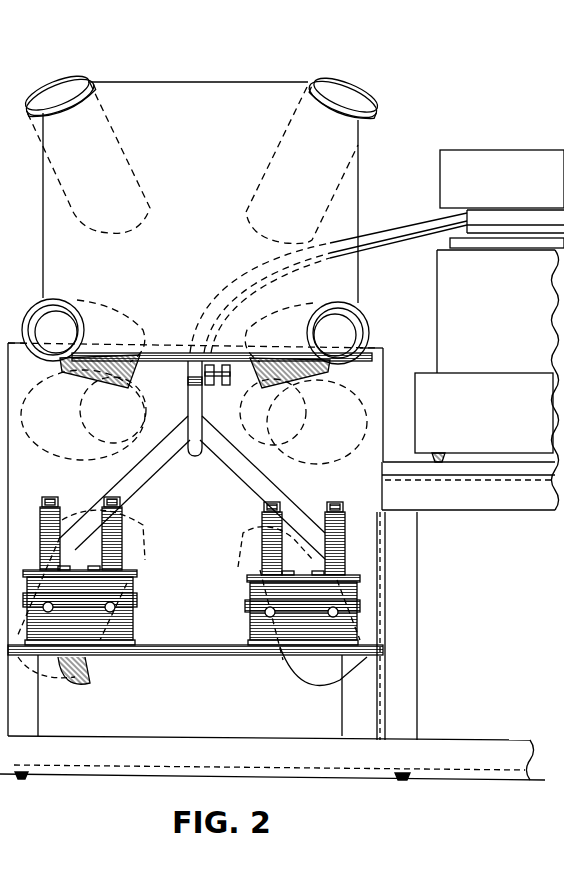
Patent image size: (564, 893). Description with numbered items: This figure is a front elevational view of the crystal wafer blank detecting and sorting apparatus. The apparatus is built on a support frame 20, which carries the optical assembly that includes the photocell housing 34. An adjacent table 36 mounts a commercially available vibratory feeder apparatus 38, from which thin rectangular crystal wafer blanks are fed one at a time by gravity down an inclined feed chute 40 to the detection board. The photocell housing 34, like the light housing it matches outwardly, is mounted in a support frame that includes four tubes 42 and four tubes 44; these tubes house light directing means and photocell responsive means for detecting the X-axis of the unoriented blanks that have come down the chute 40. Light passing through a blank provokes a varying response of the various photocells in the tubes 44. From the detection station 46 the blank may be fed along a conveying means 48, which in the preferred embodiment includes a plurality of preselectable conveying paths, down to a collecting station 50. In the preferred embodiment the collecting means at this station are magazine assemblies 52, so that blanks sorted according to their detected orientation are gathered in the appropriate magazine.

The support frame 20 is at (132, 747).
The photocell housing 34 is at (207, 92).
The table 36 is at (485, 463).
The vibratory feeder apparatus 38 is at (470, 150).
The feed chute 40 is at (393, 223).
The tubes 42 is at (91, 434).
The tubes 44 is at (48, 88).
The detection station 46 is at (188, 383).
The conveying means 48 is at (180, 462).
The collecting station 50 is at (143, 600).
The magazine assemblies 52 is at (53, 495).